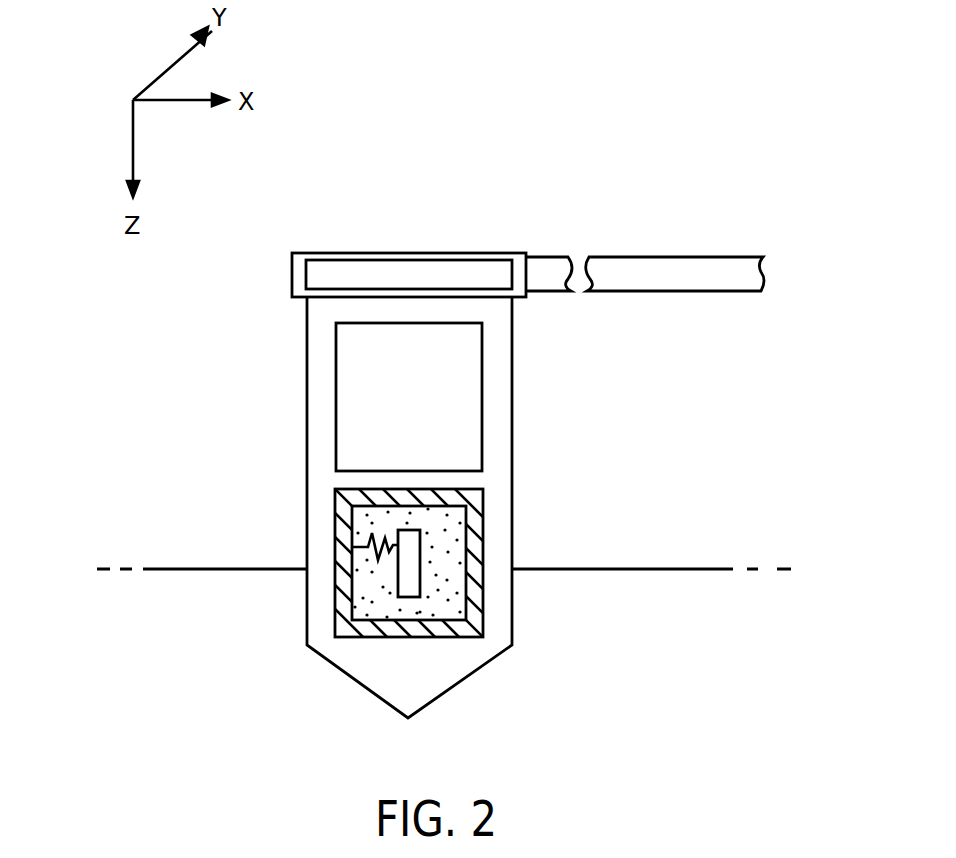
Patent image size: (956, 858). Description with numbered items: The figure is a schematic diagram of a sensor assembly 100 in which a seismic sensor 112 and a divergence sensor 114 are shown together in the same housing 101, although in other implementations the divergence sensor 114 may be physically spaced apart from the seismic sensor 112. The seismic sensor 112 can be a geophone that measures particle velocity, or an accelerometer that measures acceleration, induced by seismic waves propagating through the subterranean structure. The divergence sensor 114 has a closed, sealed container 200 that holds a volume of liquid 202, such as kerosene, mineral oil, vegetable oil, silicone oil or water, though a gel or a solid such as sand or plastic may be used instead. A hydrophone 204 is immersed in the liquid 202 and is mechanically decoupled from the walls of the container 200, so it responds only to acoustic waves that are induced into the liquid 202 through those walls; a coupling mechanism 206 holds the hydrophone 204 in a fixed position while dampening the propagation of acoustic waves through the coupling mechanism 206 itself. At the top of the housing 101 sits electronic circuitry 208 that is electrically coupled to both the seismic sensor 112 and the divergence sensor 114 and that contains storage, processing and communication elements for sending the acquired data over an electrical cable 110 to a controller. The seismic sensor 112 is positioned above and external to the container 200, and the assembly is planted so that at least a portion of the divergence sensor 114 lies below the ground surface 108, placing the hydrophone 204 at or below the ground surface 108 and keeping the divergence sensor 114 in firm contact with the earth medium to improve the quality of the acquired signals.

The sensor assembly 100 is at (272, 366).
The housing 101 is at (320, 557).
The ground surface 108 is at (623, 569).
The electrical cable 110 is at (673, 257).
The seismic sensor 112 is at (459, 396).
The divergence sensor 114 is at (492, 596).
The closed container 200 is at (409, 607).
The liquid 202 is at (433, 613).
The hydrophone 204 is at (409, 598).
The coupling mechanism 206 is at (367, 545).
The electronic circuitry 208 is at (408, 260).